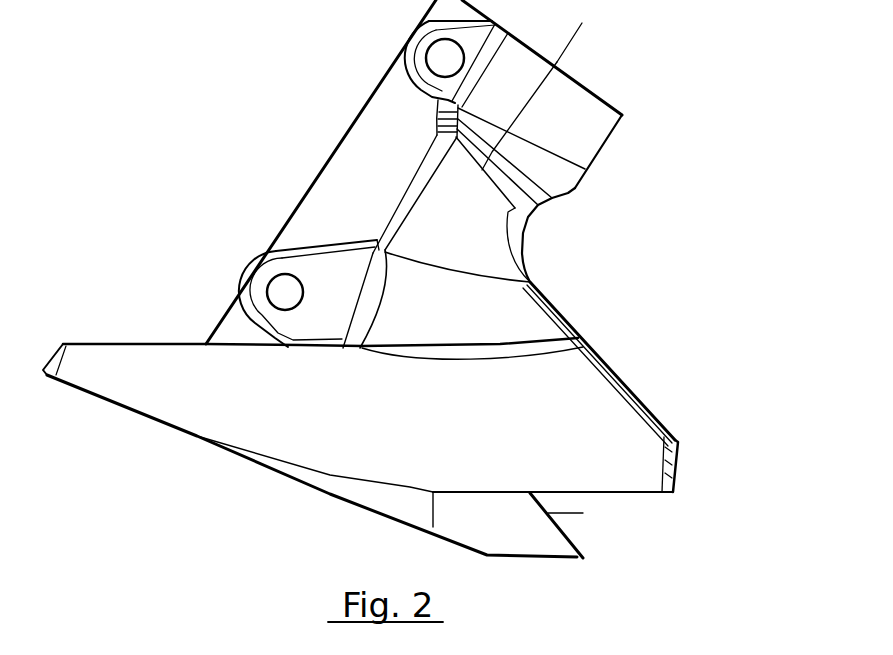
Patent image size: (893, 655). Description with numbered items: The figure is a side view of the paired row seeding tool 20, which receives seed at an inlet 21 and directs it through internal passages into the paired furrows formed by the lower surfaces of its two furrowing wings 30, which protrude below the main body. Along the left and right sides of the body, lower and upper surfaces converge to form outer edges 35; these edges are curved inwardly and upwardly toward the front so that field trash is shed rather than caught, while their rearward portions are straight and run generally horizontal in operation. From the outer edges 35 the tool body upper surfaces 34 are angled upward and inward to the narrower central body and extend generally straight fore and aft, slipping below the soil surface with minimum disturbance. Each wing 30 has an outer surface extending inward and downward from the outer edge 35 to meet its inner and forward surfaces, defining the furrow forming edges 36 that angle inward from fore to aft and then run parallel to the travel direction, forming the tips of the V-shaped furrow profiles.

The paired row seeding tool 20 is at (730, 185).
The inlet 21 is at (580, 78).
The furrowing wing 30 is at (558, 527).
The tool body upper surface 34 is at (582, 400).
The outer edge 35 is at (280, 460).
The furrow forming edge 36 is at (335, 491).